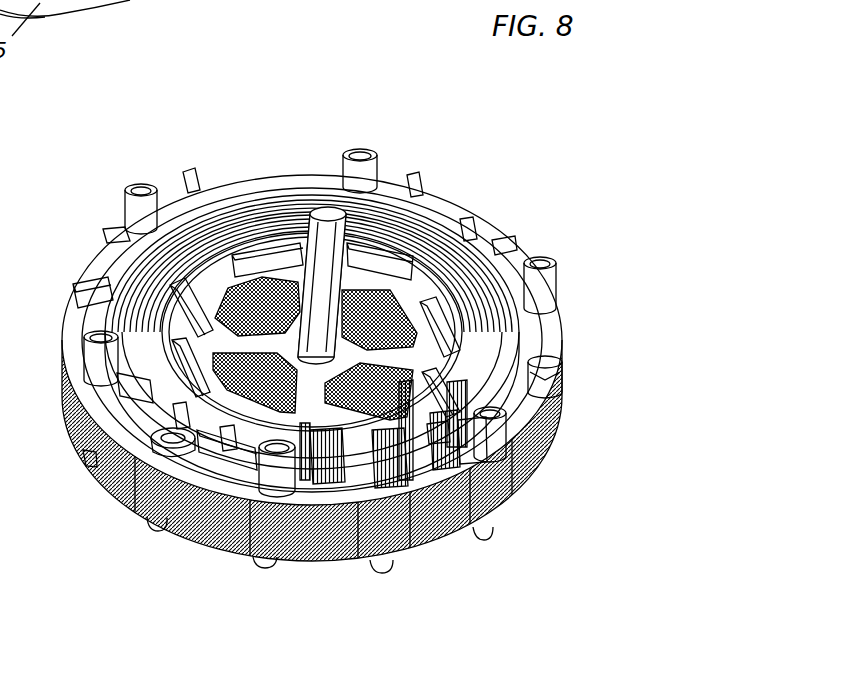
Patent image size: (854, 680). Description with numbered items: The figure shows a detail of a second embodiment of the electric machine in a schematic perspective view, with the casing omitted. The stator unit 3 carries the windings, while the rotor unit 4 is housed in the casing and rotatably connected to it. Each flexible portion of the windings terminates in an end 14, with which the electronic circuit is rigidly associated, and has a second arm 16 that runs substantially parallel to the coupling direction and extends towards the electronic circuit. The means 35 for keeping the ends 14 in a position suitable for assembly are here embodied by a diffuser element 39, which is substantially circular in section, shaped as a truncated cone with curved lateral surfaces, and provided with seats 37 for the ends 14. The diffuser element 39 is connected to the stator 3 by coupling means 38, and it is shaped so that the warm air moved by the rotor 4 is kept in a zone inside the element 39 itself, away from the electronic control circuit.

The stator unit 3 is at (568, 411).
The rotor unit 4 is at (277, 323).
The end of flexible portion 14 is at (258, 545).
The second arm 16 is at (335, 440).
The means for keeping the ends in a position suitable for assembly 35 is at (82, 452).
The seats 37 is at (362, 485).
The coupling means 38 is at (558, 395).
The diffuser element 39 is at (386, 190).